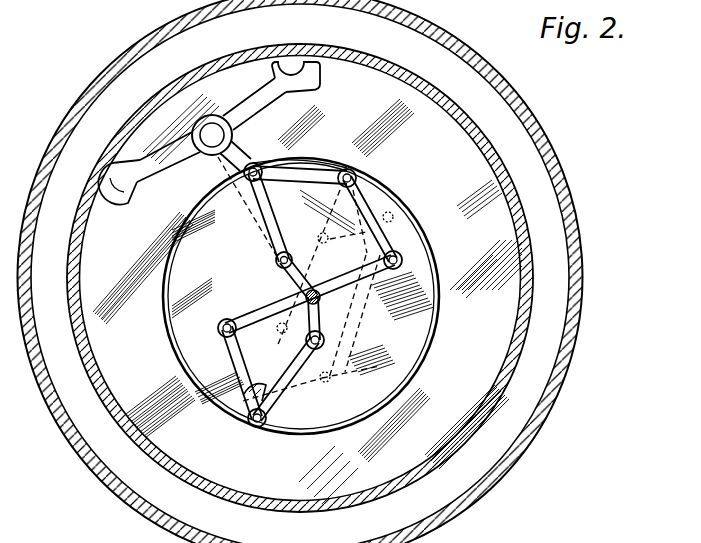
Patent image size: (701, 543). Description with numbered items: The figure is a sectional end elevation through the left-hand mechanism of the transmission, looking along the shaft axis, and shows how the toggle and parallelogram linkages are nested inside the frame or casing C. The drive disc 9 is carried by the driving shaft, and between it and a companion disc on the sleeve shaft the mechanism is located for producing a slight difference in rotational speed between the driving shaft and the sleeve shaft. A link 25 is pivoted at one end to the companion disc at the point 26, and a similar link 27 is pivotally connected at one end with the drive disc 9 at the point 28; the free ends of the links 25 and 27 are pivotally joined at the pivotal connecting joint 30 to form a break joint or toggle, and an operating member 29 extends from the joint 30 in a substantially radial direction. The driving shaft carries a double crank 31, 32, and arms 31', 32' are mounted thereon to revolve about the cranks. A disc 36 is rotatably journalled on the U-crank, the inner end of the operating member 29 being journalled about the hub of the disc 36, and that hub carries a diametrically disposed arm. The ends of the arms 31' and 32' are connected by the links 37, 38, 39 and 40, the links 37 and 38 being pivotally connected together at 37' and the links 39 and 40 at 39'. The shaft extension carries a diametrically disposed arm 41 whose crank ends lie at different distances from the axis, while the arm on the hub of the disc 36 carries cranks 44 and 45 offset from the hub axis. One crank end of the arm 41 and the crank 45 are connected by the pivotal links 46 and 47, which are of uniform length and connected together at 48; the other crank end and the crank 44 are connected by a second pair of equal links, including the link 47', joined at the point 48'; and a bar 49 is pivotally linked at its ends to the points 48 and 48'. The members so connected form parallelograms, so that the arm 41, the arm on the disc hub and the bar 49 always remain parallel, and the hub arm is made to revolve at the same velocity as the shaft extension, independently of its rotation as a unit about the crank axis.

The frame or casing C is at (546, 431).
The drive disc 9 is at (386, 72).
The link 25 is at (170, 162).
The pivot point 26 is at (118, 200).
The link 27 is at (268, 104).
The pivot point 28 is at (305, 80).
The operating member 29 is at (254, 164).
The pivotal connecting joint 30 is at (213, 130).
The crank 31 is at (314, 303).
The arm 31' is at (306, 296).
The crank 32 is at (265, 265).
The arm 32' is at (276, 216).
The disc 36 is at (440, 304).
The link 37 is at (233, 373).
The pivotal connection 37' is at (257, 437).
The link 38 is at (290, 397).
The link 39 is at (300, 163).
The pivotal connection 39' is at (372, 168).
The link 40 is at (401, 249).
The diametrically disposed arm 41 is at (326, 217).
The crank 44 is at (246, 397).
The crank 45 is at (318, 238).
The pivotal link 46 is at (393, 191).
The pivotal link 47 is at (348, 249).
The link 47' is at (346, 391).
The connecting point 48 is at (398, 221).
The connecting point 48' is at (316, 362).
The bar 49 is at (356, 333).